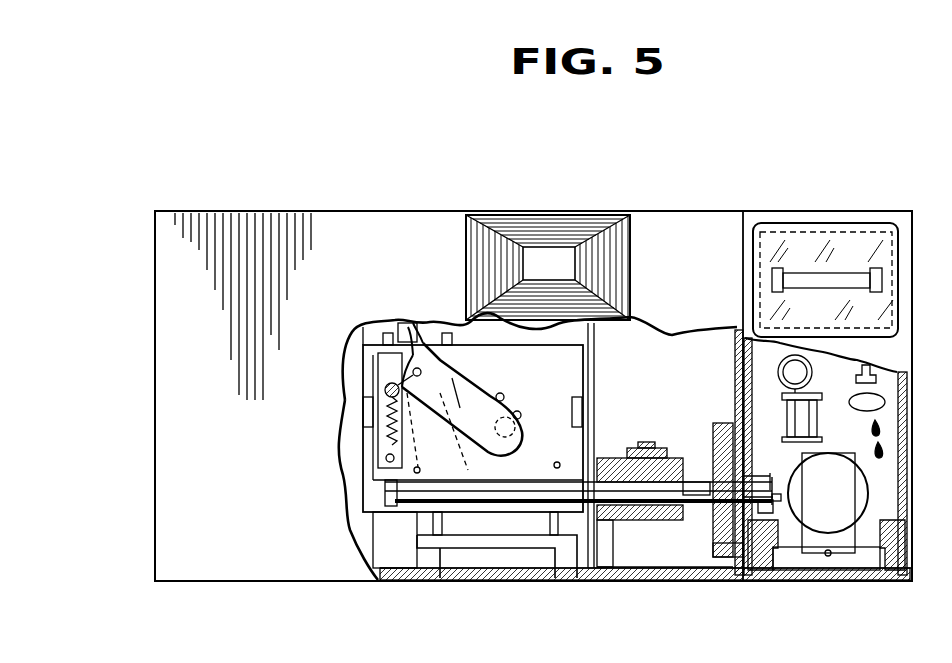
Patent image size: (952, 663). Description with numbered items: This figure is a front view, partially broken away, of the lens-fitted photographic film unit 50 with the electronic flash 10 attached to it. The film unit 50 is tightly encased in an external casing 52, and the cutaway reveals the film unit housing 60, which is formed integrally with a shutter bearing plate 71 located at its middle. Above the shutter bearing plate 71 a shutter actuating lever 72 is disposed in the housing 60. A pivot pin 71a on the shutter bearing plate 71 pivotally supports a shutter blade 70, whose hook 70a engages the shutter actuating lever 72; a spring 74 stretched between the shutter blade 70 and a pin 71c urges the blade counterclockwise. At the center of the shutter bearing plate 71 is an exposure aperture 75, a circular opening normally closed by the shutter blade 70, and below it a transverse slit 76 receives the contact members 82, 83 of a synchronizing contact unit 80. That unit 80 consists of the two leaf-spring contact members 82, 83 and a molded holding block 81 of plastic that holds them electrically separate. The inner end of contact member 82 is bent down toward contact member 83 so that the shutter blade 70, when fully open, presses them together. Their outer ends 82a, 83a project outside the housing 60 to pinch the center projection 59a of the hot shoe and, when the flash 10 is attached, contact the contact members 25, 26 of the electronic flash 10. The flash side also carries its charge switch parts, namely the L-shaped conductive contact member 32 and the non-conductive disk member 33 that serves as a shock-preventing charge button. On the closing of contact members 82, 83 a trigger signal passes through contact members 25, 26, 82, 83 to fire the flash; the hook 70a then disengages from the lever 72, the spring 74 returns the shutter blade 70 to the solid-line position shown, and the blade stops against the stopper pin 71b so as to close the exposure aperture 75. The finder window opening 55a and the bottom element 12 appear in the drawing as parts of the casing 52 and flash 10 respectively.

The electronic flash 10 is at (843, 205).
The camera bottom wall 12 is at (795, 583).
The contact member 25 is at (737, 427).
The contact member 26 is at (765, 505).
The L-shaped conductive contact member 32 is at (840, 548).
The non-conductive disk member 33 is at (857, 490).
The lens-fitted photographic film unit 50 is at (678, 200).
The external casing 52 is at (557, 578).
The viewfinder window 55a is at (553, 215).
The center projection 59a is at (743, 490).
The film unit housing 60 is at (408, 572).
The shutter blade 70 is at (463, 400).
The hook 70a is at (423, 347).
The shutter bearing plate 71 is at (480, 540).
The pivot pin 71a is at (413, 372).
The stopper pin 71b is at (500, 397).
The pin 71c is at (380, 465).
The shutter actuating lever 72 is at (407, 327).
The spring 74 is at (380, 438).
The exposure aperture 75 is at (515, 434).
The transverse slit 76 is at (385, 490).
The synchronizing contact unit 80 is at (632, 540).
The molded holding block 81 is at (610, 457).
The contact member 82 is at (530, 492).
The outer end 82a is at (713, 483).
The contact member 83 is at (410, 508).
The outer end 83a is at (712, 510).